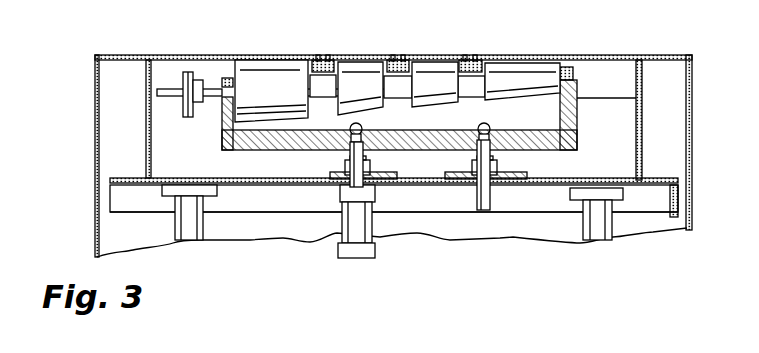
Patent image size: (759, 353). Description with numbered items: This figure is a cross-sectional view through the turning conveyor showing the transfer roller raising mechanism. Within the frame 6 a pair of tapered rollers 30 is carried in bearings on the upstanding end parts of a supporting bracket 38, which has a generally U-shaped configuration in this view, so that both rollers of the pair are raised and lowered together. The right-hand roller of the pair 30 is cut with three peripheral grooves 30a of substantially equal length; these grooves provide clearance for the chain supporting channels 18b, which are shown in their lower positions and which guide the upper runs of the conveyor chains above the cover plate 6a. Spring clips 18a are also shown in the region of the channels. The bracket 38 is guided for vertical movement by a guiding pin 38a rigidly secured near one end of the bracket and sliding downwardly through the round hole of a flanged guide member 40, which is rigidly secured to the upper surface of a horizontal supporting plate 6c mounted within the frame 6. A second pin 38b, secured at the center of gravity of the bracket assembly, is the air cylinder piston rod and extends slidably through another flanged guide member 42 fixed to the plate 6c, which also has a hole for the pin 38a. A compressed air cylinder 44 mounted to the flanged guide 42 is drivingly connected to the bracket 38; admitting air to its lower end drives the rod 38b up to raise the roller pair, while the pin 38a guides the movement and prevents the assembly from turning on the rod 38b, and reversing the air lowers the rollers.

The frame 6 is at (698, 75).
The cover plate 6a is at (168, 57).
The horizontal supporting plate 6c is at (237, 185).
The spring clip 18a is at (321, 55).
The chain supporting channel 18b is at (340, 62).
The tapered roller pair 30 is at (263, 60).
The peripheral grooves 30a is at (413, 100).
The supporting bracket 38 is at (222, 144).
The guiding pin 38a is at (490, 210).
The second pin (air cylinder piston rod) 38b is at (347, 152).
The flanged guide member 40 is at (448, 185).
The flanged guide member 42 is at (323, 188).
The compressed air cylinder 44 is at (368, 258).